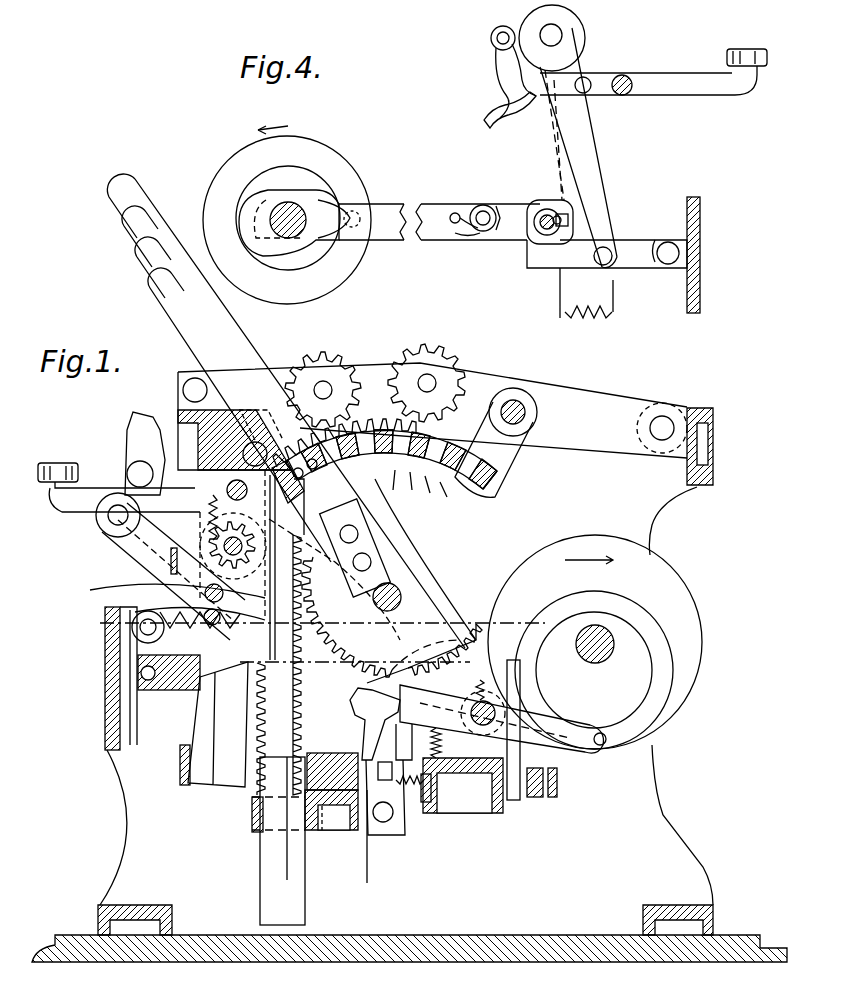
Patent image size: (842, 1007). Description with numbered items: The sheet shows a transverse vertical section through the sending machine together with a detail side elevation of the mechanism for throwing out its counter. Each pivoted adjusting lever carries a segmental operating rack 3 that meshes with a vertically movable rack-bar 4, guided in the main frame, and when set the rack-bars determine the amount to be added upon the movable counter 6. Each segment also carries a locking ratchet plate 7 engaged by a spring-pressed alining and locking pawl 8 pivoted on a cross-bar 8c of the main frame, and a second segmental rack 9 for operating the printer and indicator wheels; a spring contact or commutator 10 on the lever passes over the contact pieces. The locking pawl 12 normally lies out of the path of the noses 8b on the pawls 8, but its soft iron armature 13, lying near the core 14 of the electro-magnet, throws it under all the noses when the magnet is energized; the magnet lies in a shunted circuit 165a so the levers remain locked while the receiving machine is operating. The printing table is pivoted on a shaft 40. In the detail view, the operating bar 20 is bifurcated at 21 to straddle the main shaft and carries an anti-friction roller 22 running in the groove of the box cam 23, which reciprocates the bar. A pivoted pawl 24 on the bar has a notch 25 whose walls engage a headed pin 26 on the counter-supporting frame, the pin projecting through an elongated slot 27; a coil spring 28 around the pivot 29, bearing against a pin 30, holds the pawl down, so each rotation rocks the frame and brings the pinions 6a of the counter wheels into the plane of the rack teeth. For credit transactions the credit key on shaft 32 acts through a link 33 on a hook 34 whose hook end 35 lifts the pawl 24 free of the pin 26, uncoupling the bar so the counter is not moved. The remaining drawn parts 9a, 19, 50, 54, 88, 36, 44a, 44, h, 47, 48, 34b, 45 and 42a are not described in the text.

In FIG. 4, the box cam 23 is at (214, 181).
In FIG. 4, the bifurcated portion 21 is at (298, 190).
In FIG. 4, the anti-friction roller 22 is at (356, 213).
In FIG. 4, the shaft 9a is at (283, 240).
In FIG. 1, the shaft 9a is at (594, 664).
In FIG. 4, the operating bar 20 is at (372, 242).
In FIG. 4, the pivoted pawl 24 is at (516, 210).
In FIG. 4, the pivot 29 is at (479, 206).
In FIG. 4, the pin 30 is at (452, 226).
In FIG. 4, the coil spring 28 is at (470, 234).
In FIG. 4, the notch 25 is at (572, 208).
In FIG. 4, the headed pin 26 is at (566, 216).
In FIG. 4, the elongated slot 27 is at (572, 222).
In FIG. 4, the hook end 35 is at (535, 250).
In FIG. 4, the link 33 is at (590, 140).
In FIG. 4, the rod 19 is at (558, 146).
In FIG. 4, the hook 34 is at (692, 80).
In FIG. 1, the hook 34 is at (70, 510).
In FIG. 4, the shaft 32 is at (622, 75).
In FIG. 4, the pin 50 is at (492, 37).
In FIG. 4, the link 54 is at (494, 58).
In FIG. 4, the pawl 88 is at (486, 110).
In FIG. 1, the frame arm 36 is at (322, 352).
In FIG. 1, the pivot 44a is at (640, 440).
In FIG. 1, the second segmental rack 9 is at (448, 432).
In FIG. 1, the sector 44 is at (440, 508).
In FIG. 1, the shaft 40 is at (342, 470).
In FIG. 1, the rack-bar 4 is at (290, 712).
In FIG. 1, the pivot h is at (400, 590).
In FIG. 1, the segmental operating rack 3 is at (381, 617).
In FIG. 1, the locking ratchet plate 7 is at (478, 646).
In FIG. 1, the movable counter 6 is at (195, 540).
In FIG. 1, the pinion 6a is at (250, 542).
In FIG. 1, the arm 47 is at (175, 586).
In FIG. 1, the block 48 is at (205, 712).
In FIG. 1, the bracket 34b is at (190, 684).
In FIG. 1, the alining and locking pawl 8 is at (503, 719).
In FIG. 1, the core 14 is at (400, 704).
In FIG. 1, the nose 8b is at (394, 735).
In FIG. 1, the soft iron armature 13 is at (418, 768).
In FIG. 1, the cylinder 45 is at (322, 766).
In FIG. 1, the shunted circuit 165a is at (365, 875).
In FIG. 1, the slide 42a is at (336, 822).
In FIG. 1, the locking pawl 12 is at (390, 826).
In FIG. 1, the spring contact or commutator 10 is at (460, 814).
In FIG. 1, the cross-bar 8c is at (463, 785).